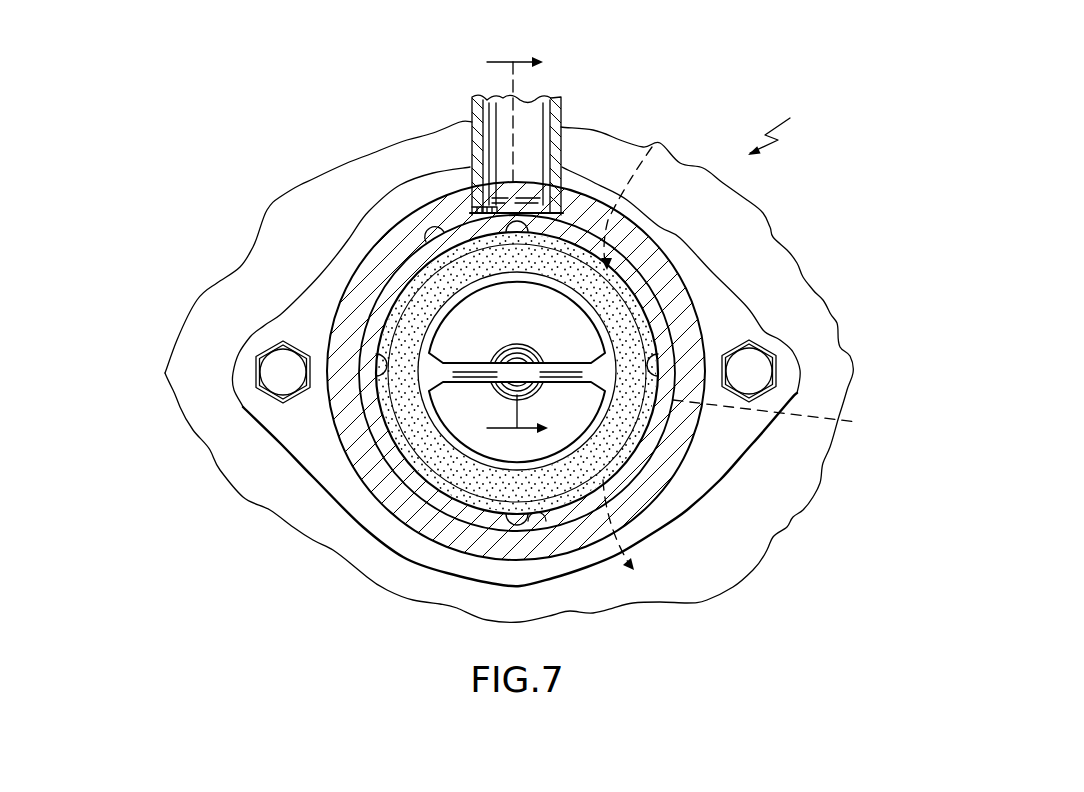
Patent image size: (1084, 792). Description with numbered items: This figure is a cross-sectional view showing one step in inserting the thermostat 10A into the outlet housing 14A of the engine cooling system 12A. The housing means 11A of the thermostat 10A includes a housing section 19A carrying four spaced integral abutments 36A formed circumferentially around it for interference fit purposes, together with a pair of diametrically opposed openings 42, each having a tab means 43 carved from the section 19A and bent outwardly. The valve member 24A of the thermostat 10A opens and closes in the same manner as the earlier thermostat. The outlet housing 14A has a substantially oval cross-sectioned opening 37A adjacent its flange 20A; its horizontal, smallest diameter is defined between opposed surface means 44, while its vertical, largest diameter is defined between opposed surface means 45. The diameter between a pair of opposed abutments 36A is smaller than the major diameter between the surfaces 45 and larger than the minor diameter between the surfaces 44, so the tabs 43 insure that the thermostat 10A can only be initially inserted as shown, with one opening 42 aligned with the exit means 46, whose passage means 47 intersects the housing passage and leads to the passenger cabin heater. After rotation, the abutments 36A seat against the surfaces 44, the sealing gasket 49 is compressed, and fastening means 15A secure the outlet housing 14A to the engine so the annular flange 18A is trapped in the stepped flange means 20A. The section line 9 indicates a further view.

The section line 9- 9 is at (517, 243).
The thermostat 10A is at (452, 478).
The housing means 11A is at (615, 410).
The engine cooling system 12A is at (797, 125).
The outlet housing 14A is at (337, 305).
The fastening means 15A is at (765, 370).
The annular flange 18A is at (787, 417).
The housing section 19A is at (385, 423).
The flange 20A is at (732, 297).
The valve member 24A is at (493, 324).
The abutments 36A is at (390, 283).
The oval cross-sectioned opening 37A is at (432, 232).
The openings 42 is at (644, 351).
The tab means 43 is at (477, 193).
The opposed surface means 44 is at (372, 360).
The opposed surface means 45 is at (535, 212).
The exit means 46 is at (563, 100).
The passage means 47 is at (489, 97).
The sealing gasket 49 is at (462, 506).